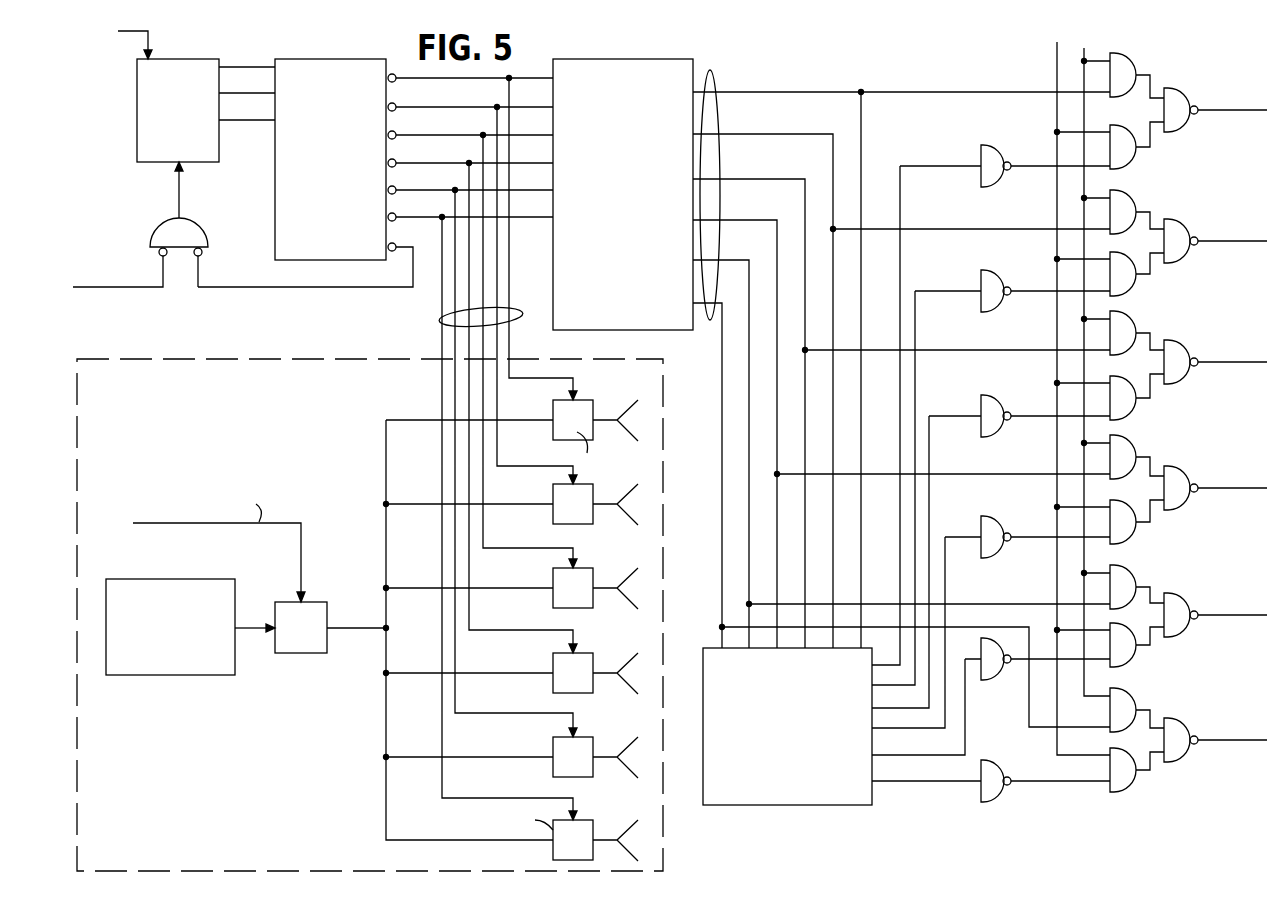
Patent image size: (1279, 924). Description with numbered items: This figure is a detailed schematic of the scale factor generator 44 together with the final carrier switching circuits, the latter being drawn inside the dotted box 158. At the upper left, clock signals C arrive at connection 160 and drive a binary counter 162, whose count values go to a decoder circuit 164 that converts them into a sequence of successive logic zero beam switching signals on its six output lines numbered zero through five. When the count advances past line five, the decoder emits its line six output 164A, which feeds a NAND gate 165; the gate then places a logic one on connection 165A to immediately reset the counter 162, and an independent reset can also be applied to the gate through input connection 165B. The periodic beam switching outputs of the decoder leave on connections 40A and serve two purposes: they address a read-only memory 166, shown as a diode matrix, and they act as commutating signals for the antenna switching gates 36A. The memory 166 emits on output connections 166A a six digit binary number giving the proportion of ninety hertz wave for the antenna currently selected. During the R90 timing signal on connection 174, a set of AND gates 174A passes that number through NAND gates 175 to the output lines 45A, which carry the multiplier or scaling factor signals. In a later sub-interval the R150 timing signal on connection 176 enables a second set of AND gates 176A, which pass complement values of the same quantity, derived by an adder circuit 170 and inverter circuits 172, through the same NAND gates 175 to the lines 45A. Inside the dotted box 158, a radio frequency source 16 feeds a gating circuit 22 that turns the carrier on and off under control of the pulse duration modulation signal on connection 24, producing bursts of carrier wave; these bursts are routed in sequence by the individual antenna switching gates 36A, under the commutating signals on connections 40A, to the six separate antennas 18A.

The connection 160 is at (127, 38).
The binary counter 162 is at (175, 53).
The decoder circuit 164 is at (320, 58).
The decoder line six output 164A is at (323, 289).
The NAND gate 165 is at (206, 234).
The connection 165A is at (181, 210).
The input connection 165B is at (136, 284).
The read-only memory 166 is at (625, 60).
The output connections 166A is at (712, 72).
The connections 40A is at (447, 317).
The scale factor generator 44 is at (895, 73).
The dotted box 158 is at (107, 357).
The radio frequency source 16 is at (150, 578).
The gating circuit 22 is at (292, 654).
The connection 24 is at (153, 523).
The antenna switching gates 36A is at (553, 433).
The antennas 18A is at (633, 401).
The adder circuit 170 is at (857, 806).
The inverter circuits 172 is at (995, 186).
The connection 174 is at (1086, 49).
The connection 176 is at (1055, 63).
The AND gates 174A is at (1137, 60).
The AND gates 176A is at (1137, 158).
The NAND gates 175 is at (1182, 90).
The output lines 45A is at (1215, 110).